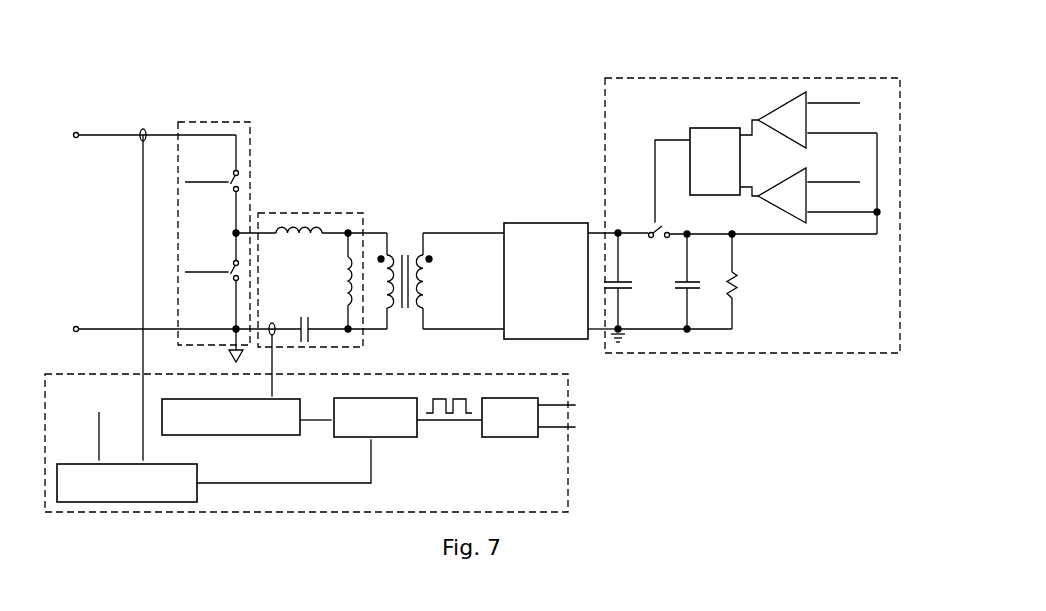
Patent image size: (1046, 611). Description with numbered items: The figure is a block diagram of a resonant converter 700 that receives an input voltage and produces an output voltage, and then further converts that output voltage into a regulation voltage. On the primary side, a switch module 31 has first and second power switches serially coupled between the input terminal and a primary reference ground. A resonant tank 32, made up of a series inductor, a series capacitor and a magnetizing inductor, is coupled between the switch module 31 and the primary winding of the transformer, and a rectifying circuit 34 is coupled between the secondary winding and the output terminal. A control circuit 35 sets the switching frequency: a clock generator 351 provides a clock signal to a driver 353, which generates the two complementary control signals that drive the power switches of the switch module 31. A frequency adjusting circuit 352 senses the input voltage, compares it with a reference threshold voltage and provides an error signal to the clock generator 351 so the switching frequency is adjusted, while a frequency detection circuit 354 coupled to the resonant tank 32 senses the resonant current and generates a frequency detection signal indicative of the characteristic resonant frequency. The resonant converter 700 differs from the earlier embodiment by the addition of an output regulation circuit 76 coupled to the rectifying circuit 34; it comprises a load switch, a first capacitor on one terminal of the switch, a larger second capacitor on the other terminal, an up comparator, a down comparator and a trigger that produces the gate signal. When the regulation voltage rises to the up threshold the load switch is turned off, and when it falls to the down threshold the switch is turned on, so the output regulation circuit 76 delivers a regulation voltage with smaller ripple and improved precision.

The resonant converter 700 is at (877, 26).
The switch module 31 is at (252, 150).
The resonant tank 32 is at (303, 212).
The rectifying circuit 34 is at (538, 343).
The control circuit 35 is at (572, 468).
The clock generator 351 is at (388, 439).
The frequency adjusting circuit 352 is at (202, 499).
The driver 353 is at (507, 439).
The frequency detection circuit 354 is at (270, 439).
The output regulation circuit 76 is at (705, 356).